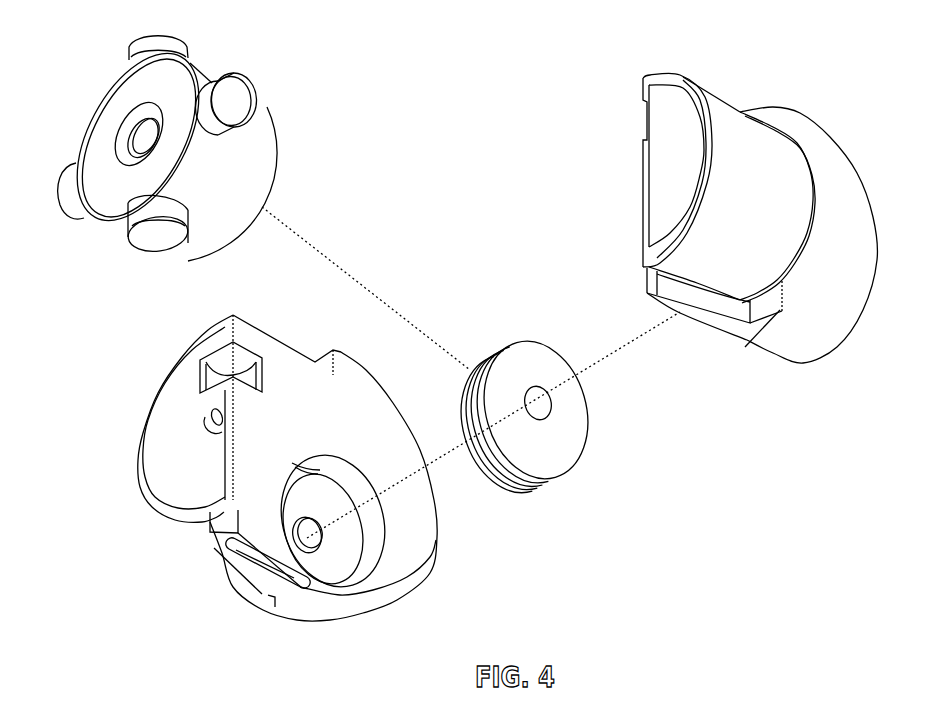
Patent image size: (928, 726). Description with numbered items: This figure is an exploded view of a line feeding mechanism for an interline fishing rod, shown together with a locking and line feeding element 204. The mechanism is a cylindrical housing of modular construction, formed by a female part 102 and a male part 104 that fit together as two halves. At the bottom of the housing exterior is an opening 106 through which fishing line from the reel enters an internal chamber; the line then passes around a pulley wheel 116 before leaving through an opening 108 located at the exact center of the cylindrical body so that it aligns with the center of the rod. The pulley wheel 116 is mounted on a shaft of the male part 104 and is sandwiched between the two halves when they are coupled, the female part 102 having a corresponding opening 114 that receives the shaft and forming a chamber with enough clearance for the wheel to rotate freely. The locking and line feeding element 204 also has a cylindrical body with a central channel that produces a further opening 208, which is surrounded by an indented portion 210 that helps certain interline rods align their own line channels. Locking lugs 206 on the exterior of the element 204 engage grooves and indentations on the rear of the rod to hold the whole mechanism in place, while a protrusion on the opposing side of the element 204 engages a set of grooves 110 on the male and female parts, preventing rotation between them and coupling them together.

The female part 102 is at (137, 453).
The male part 104 is at (718, 100).
The opening 106 is at (280, 573).
The opening 108 is at (212, 413).
The set of grooves 110 is at (215, 353).
The opening 114 is at (320, 547).
The pulley wheel 116 is at (570, 455).
The locking and line feeding element 204 is at (280, 147).
The locking lugs 206 is at (236, 94).
The opening 208 is at (138, 138).
The indented portion 210 is at (145, 112).